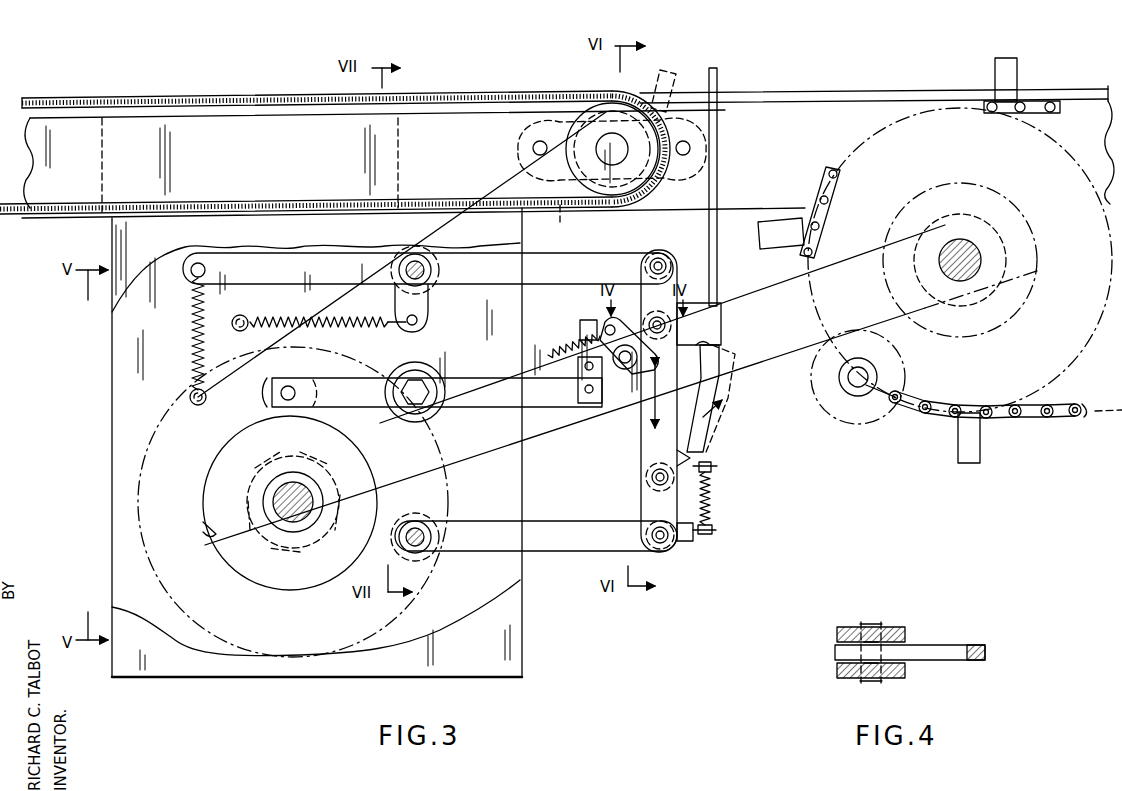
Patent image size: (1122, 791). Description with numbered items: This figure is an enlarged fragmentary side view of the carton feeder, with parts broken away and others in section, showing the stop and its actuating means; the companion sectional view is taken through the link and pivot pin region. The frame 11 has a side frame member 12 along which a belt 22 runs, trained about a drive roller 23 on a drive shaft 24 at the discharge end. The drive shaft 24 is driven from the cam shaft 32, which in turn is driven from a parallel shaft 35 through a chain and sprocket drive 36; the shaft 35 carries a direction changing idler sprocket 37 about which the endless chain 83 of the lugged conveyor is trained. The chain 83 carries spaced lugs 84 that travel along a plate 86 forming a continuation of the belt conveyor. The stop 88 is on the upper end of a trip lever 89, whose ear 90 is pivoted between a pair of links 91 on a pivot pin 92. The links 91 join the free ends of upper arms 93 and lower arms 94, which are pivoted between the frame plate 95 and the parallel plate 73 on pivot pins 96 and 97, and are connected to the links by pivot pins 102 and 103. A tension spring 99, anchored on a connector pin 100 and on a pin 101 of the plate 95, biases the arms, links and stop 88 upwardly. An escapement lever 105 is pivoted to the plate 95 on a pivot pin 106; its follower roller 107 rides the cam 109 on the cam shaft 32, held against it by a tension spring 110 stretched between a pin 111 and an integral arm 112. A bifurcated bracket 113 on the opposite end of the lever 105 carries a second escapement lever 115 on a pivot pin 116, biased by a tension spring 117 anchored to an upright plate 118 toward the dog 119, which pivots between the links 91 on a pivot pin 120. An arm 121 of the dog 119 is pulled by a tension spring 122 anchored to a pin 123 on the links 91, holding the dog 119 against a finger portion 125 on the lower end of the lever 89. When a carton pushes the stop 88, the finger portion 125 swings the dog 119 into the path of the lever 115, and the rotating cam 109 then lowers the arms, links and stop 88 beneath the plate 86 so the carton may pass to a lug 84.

In FIG. 3, the frame 11 is at (258, 678).
In FIG. 3, the side frame member 12 is at (42, 222).
In FIG. 3, the belt 22 is at (464, 96).
In FIG. 3, the drive roller 23 is at (703, 134).
In FIG. 3, the drive shaft 24 is at (612, 148).
In FIG. 3, the cam shaft 32 is at (274, 512).
In FIG. 3, the shaft 35 is at (982, 265).
In FIG. 3, the chain and sprocket drive 36 is at (812, 380).
In FIG. 3, the direction changing idler sprocket 37 is at (1085, 352).
In FIG. 3, the plate 73 is at (527, 637).
In FIG. 3, the endless chain 83 is at (1060, 418).
In FIG. 3, the lug 84 is at (1012, 73).
In FIG. 3, the plate 86 is at (848, 92).
In FIG. 3, the stop 88 is at (716, 70).
In FIG. 3, the trip lever 89 is at (718, 266).
In FIG. 4, the trip lever 89 is at (980, 644).
In FIG. 3, the ear 90 is at (722, 345).
In FIG. 4, the ear 90 is at (928, 644).
In FIG. 3, the link 91 is at (643, 500).
In FIG. 4, the link 91 is at (838, 655).
In FIG. 3, the pivot pin 92 is at (648, 290).
In FIG. 4, the pivot pin 92 is at (878, 626).
In FIG. 3, the upper arm 93 is at (554, 552).
In FIG. 3, the lower arm 94 is at (484, 284).
In FIG. 3, the plate 95 is at (108, 236).
In FIG. 3, the pivot pin 96 is at (432, 548).
In FIG. 3, the pivot pin 97 is at (428, 288).
In FIG. 3, the tension spring 99 is at (188, 352).
In FIG. 3, the connector pin 100 is at (203, 265).
In FIG. 3, the pin 101 is at (188, 402).
In FIG. 3, the pivot pin 102 is at (668, 546).
In FIG. 3, the pivot pin 103 is at (662, 258).
In FIG. 3, the escapement lever 105 is at (505, 408).
In FIG. 3, the pivot pin 106 is at (414, 405).
In FIG. 3, the follower roller 107 is at (272, 396).
In FIG. 3, the cam 109 is at (314, 588).
In FIG. 3, the tension spring 110 is at (346, 318).
In FIG. 3, the pin 111 is at (246, 318).
In FIG. 3, the arm 112 is at (395, 376).
In FIG. 3, the bifurcated bracket 113 is at (590, 405).
In FIG. 3, the escapement lever 115 is at (660, 358).
In FIG. 3, the pivot pin 116 is at (626, 372).
In FIG. 3, the tension spring 117 is at (578, 326).
In FIG. 3, the upright plate 118 is at (547, 354).
In FIG. 3, the dog 119 is at (692, 460).
In FIG. 3, the pivot pin 120 is at (647, 478).
In FIG. 3, the arm 121 is at (712, 468).
In FIG. 3, the tension spring 122 is at (712, 498).
In FIG. 3, the pin 123 is at (715, 536).
In FIG. 3, the finger portion 125 is at (734, 432).